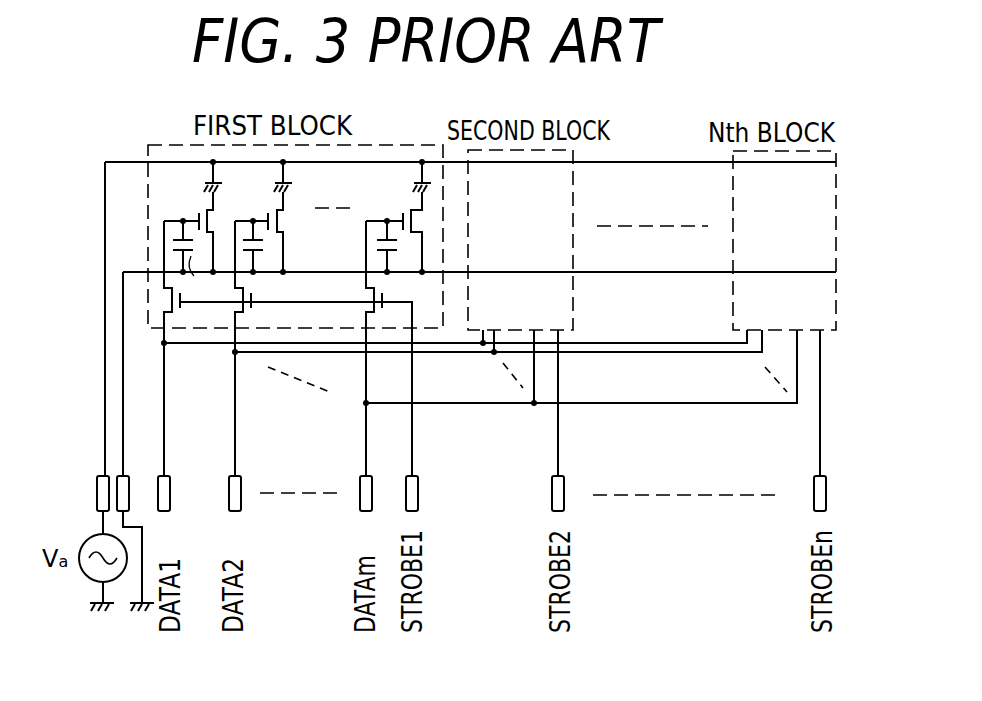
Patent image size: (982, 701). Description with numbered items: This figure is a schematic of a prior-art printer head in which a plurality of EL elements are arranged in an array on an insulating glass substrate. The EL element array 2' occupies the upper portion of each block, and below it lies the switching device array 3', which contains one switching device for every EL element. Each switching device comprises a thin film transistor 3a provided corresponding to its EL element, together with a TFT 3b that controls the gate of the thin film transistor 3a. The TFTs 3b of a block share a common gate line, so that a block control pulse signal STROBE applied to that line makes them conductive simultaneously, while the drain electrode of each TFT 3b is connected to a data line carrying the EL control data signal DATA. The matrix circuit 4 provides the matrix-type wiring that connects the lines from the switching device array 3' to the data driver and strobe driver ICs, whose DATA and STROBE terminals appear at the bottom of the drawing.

The EL element array 2' is at (434, 309).
The switching device array 3' is at (434, 317).
The thin film transistor 3a is at (172, 210).
The TFT for controlling the gate 3b is at (162, 298).
The matrix circuit 4 is at (840, 337).